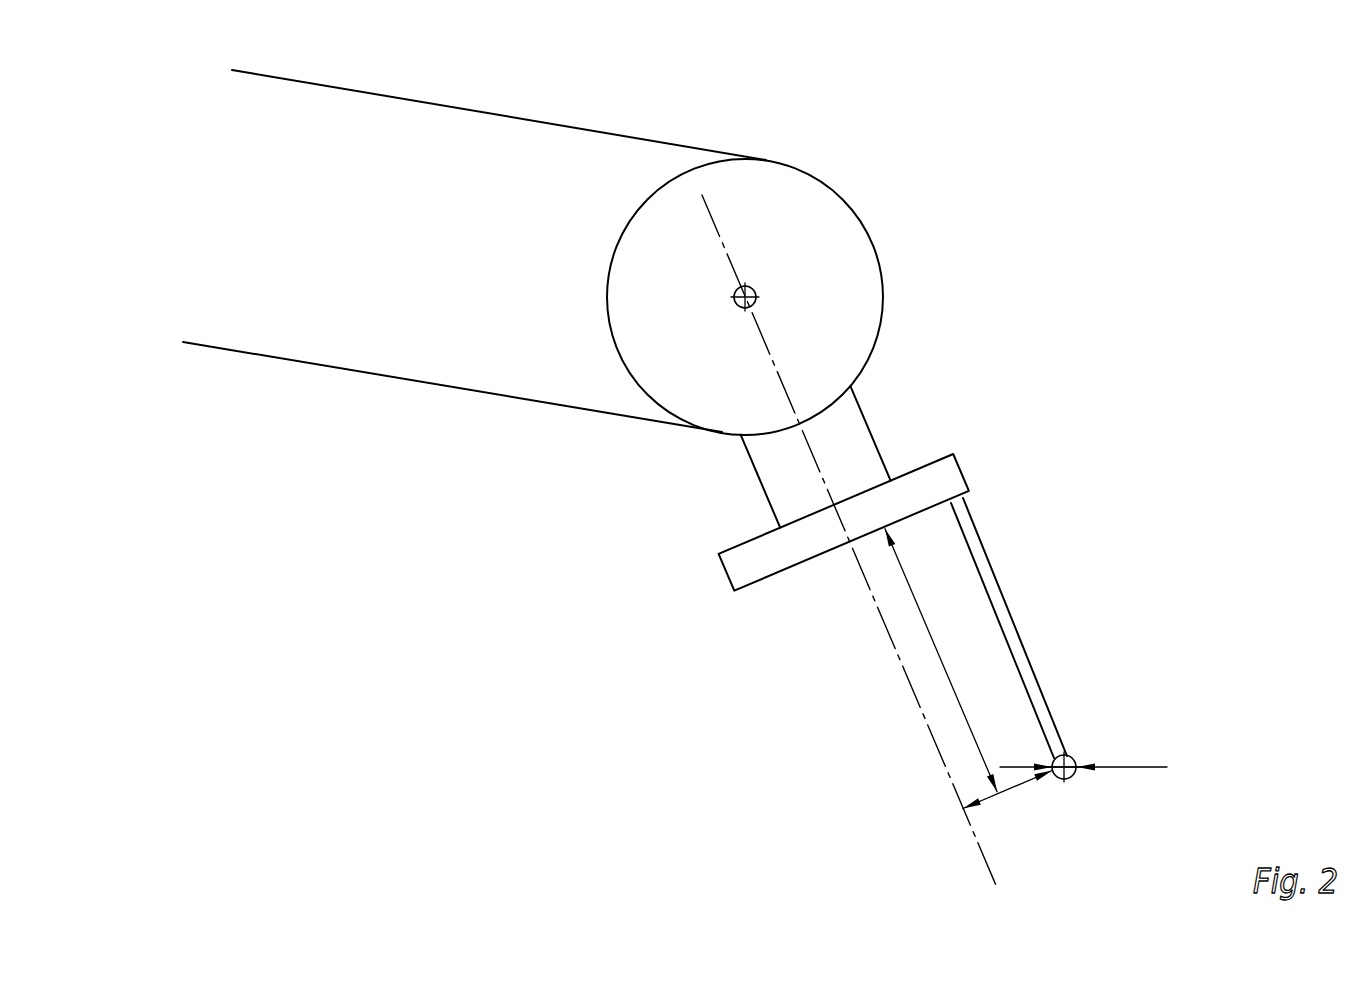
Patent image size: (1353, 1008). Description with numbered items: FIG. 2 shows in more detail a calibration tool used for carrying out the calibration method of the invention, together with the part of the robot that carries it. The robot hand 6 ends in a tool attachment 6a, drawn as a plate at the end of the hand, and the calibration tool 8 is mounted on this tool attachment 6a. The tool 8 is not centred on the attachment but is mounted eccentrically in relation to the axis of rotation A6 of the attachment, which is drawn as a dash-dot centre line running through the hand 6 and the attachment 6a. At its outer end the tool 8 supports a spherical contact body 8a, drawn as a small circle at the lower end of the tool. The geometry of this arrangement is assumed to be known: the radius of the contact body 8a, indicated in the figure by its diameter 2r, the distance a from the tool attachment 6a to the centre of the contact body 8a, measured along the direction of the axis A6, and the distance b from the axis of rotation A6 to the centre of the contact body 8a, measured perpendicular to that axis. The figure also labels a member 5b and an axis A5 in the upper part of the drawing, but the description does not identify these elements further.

The belt strand 5b is at (476, 130).
The pulley axis A5 is at (750, 292).
The axis of rotation of the tool attachment A6 is at (984, 850).
The robot hand 6 is at (848, 430).
The tool attachment 6a is at (945, 480).
The calibration tool 8 is at (1022, 639).
The spherical contact body 8a is at (1071, 778).
The diameter of the contact body 2r is at (1083, 755).
The distance from the tool attachment a is at (941, 660).
The distance from the axis of rotation b is at (1007, 793).